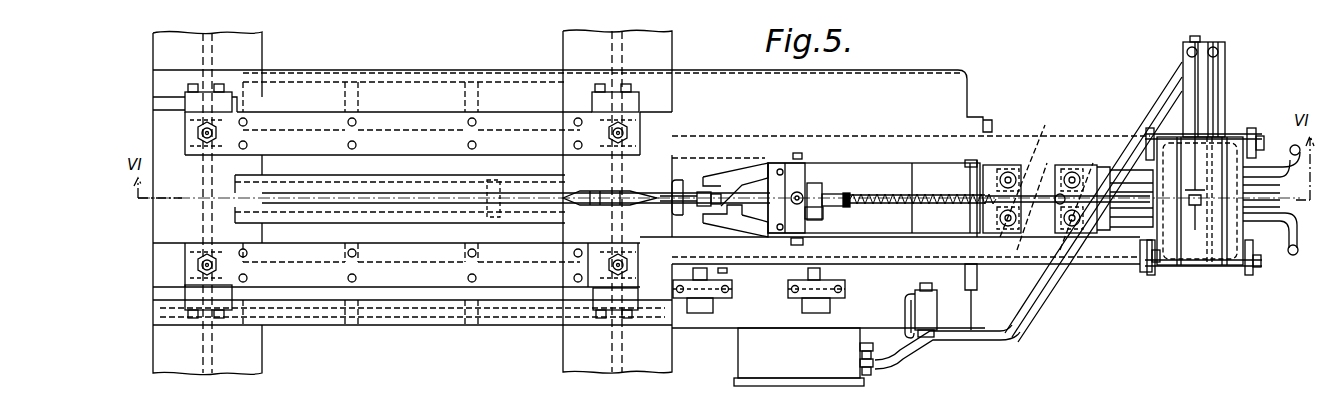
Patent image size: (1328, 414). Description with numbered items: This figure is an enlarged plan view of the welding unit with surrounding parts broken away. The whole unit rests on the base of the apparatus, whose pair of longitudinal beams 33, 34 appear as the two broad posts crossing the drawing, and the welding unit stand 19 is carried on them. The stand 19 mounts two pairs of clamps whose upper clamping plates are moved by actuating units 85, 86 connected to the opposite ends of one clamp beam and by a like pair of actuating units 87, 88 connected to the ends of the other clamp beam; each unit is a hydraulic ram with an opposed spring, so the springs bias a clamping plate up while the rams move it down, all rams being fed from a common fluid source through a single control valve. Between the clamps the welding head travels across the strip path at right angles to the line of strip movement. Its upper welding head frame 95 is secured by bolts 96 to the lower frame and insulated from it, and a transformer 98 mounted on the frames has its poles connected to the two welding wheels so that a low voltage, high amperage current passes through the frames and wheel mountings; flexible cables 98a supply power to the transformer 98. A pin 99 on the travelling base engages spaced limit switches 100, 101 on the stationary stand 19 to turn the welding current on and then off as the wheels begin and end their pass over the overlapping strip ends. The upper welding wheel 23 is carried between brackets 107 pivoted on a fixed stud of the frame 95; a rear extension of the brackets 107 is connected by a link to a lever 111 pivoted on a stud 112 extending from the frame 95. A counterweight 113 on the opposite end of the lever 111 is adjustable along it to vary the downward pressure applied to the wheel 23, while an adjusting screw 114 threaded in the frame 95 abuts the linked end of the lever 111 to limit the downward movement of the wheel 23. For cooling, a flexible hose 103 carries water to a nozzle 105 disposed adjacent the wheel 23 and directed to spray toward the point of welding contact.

The welding unit stand 19 is at (850, 317).
The upper welding wheel 23 is at (577, 205).
The longitudinal beam 33 is at (247, 355).
The longitudinal beam 34 is at (573, 357).
The actuating unit 85 is at (215, 256).
The actuating unit 86 is at (640, 300).
The actuating unit 87 is at (204, 148).
The actuating unit 88 is at (660, 112).
The upper welding head frame 95 is at (990, 170).
The bolts 96 is at (1072, 170).
The transformer 98 is at (1206, 243).
The flexible cables 98a is at (980, 338).
The pin 99 is at (723, 272).
The limit switch 100 is at (705, 311).
The limit switch 101 is at (815, 300).
The flexible hose 103 is at (743, 235).
The nozzle 105 is at (686, 202).
The brackets 107 is at (732, 167).
The lever 111 is at (835, 204).
The stud 112 is at (818, 179).
The counterweight 113 is at (933, 177).
The adjusting screw 114 is at (800, 192).